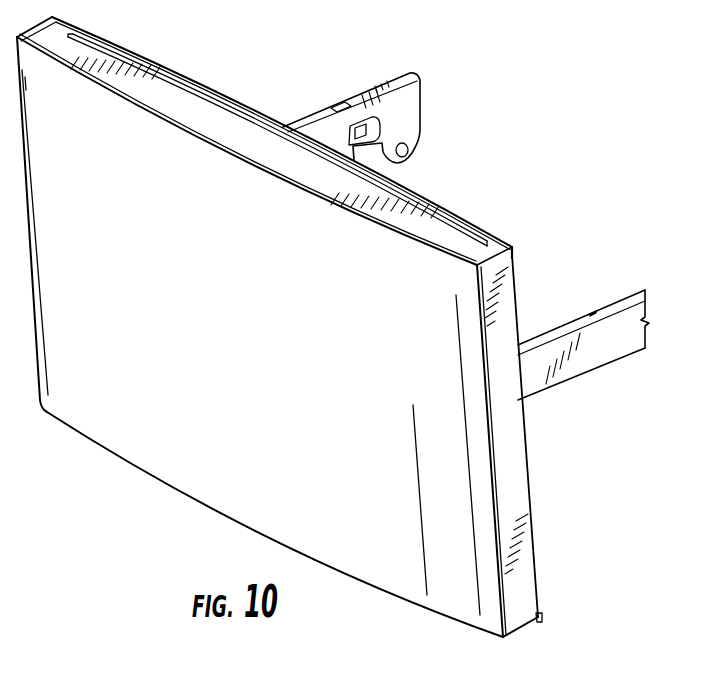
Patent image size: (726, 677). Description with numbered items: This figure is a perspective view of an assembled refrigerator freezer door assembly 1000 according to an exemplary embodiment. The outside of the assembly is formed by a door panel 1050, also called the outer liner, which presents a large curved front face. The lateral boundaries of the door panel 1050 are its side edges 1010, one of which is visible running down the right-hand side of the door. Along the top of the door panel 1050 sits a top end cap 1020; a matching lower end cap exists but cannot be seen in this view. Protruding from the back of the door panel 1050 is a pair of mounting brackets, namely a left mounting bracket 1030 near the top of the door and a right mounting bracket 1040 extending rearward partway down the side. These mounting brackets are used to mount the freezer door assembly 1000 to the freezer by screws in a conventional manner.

The refrigerator freezer door assembly 1000 is at (352, 327).
The side edge 1010 is at (515, 458).
The top end cap 1020 is at (450, 235).
The left mounting bracket 1030 is at (396, 72).
The right mounting bracket 1040 is at (615, 343).
The door panel 1050 is at (145, 393).